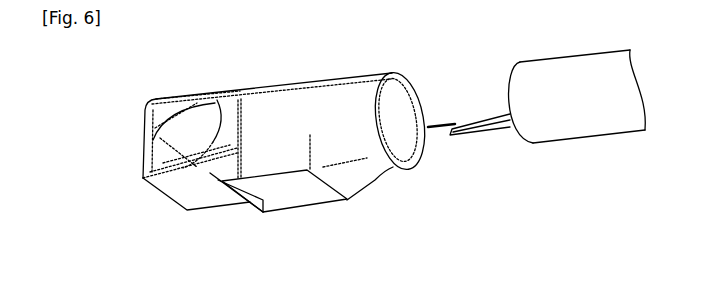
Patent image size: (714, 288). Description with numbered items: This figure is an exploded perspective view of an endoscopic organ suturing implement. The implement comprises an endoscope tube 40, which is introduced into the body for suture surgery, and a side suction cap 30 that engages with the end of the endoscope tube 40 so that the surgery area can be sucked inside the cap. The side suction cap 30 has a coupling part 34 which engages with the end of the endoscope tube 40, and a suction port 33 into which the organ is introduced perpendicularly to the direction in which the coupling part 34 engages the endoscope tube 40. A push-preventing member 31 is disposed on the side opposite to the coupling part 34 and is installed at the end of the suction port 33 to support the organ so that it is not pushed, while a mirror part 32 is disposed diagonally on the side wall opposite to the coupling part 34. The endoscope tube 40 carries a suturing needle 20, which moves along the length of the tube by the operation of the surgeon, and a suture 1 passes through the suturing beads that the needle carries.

The suture 1 is at (449, 126).
The suturing needle 20 is at (485, 135).
The side suction cap 30 is at (130, 138).
The push-preventing member 31 is at (210, 163).
The mirror part 32 is at (165, 102).
The suction port 33 is at (293, 212).
The coupling part 34 is at (392, 170).
The endoscope tube 40 is at (582, 130).